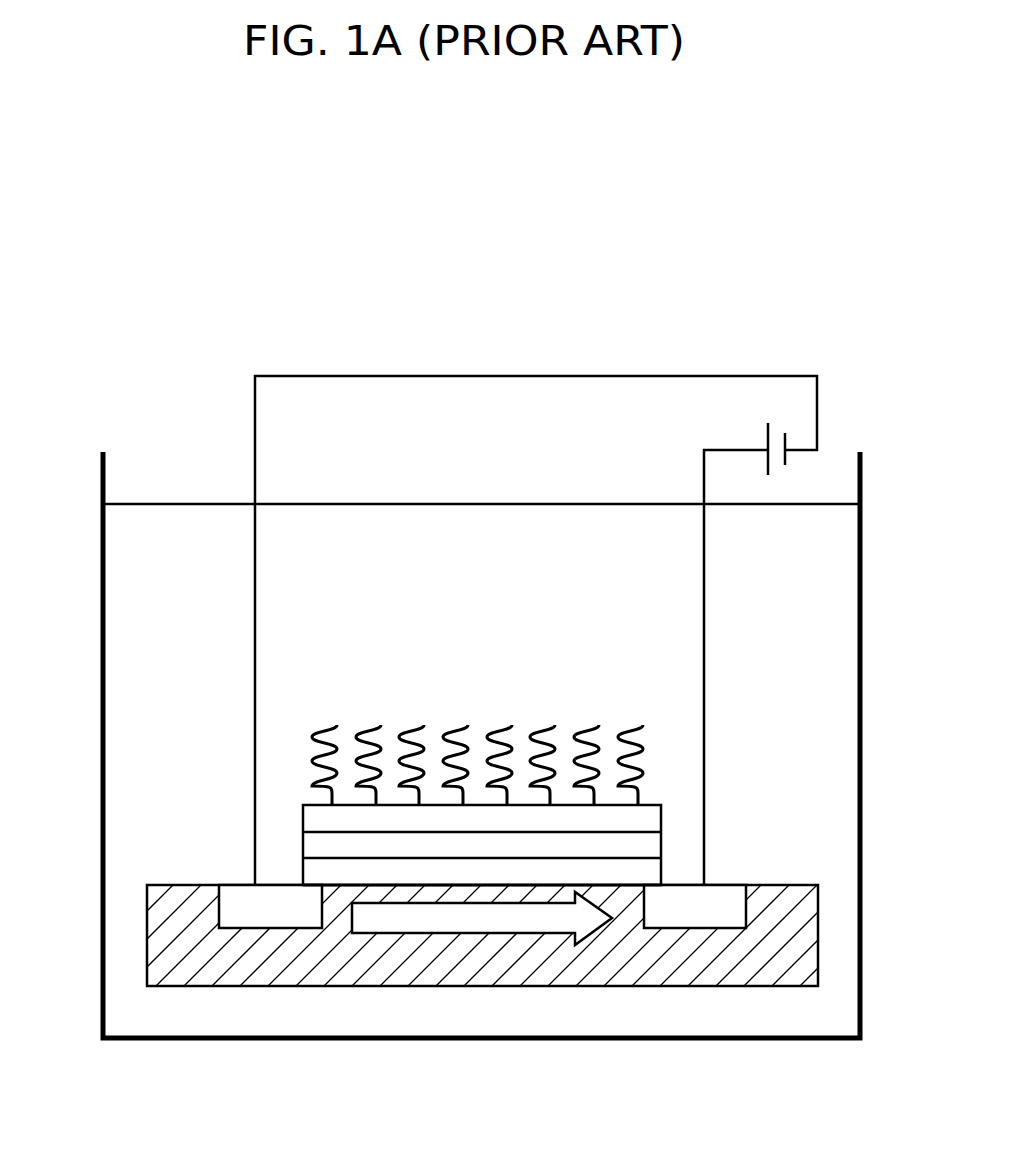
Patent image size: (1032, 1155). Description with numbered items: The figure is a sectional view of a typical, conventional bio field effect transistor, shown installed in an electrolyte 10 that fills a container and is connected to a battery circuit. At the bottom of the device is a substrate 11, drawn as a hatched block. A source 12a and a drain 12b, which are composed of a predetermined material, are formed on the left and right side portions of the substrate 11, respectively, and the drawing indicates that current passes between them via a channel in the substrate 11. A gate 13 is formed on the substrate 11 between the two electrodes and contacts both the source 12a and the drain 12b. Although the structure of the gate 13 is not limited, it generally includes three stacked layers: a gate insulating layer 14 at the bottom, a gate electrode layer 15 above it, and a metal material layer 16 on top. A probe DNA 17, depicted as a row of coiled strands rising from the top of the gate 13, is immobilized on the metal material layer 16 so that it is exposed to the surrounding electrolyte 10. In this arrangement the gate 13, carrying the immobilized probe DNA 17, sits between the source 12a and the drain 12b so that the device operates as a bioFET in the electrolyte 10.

The electrolyte 10 is at (792, 573).
The substrate 11 is at (807, 940).
The source 12a is at (222, 906).
The drain 12b is at (744, 909).
The gate 13 is at (558, 845).
The gate insulating layer 14 is at (655, 872).
The gate electrode layer 15 is at (655, 846).
The metal material layer 16 is at (655, 820).
The probe DNA 17 is at (646, 760).